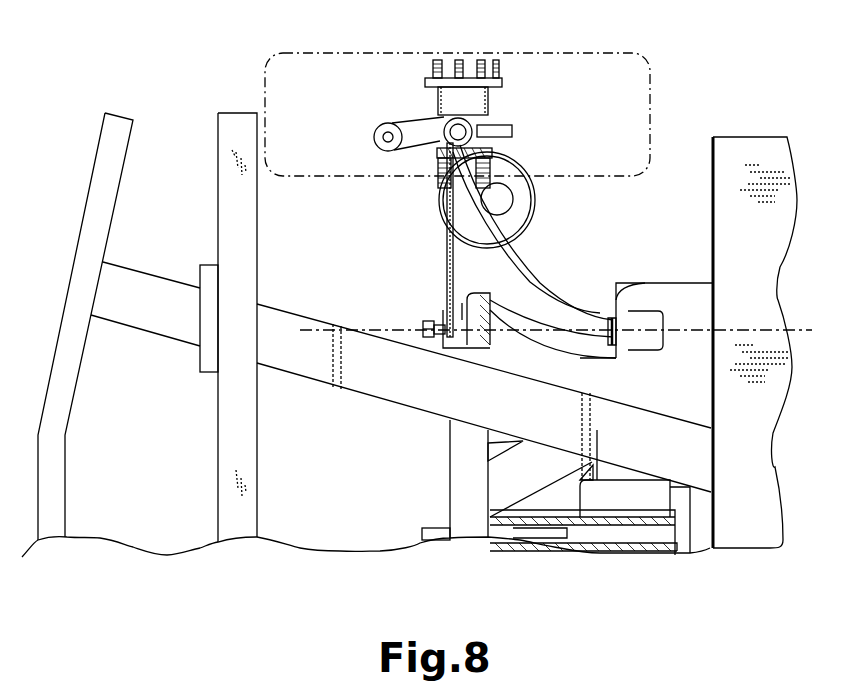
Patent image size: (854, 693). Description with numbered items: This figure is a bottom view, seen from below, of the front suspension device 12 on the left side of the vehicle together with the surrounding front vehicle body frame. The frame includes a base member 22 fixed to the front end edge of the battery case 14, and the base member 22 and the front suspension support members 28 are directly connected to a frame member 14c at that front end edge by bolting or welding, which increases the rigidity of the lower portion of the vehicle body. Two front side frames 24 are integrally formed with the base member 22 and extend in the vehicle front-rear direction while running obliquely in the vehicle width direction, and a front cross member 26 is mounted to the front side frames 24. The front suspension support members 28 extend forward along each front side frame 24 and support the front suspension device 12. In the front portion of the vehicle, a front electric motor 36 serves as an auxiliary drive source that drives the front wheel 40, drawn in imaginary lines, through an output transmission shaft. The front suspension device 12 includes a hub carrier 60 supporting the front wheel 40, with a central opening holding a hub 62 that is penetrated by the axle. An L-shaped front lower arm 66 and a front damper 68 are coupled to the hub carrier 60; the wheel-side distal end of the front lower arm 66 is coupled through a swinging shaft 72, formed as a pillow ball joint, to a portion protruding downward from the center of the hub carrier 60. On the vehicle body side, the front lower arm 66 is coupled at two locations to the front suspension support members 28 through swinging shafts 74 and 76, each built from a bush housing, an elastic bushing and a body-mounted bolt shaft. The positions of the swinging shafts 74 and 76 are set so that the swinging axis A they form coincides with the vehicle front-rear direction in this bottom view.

The front suspension device 12 is at (712, 76).
The battery case 14 is at (763, 137).
The frame member 14c is at (712, 170).
The base member 22 is at (707, 528).
The front side frame 24 is at (300, 303).
The front cross member 26 is at (218, 185).
The front suspension support member 28 is at (660, 282).
The front electric motor 36 is at (593, 535).
The front wheel 40 is at (650, 78).
The hub carrier 60 is at (410, 122).
The hub 62 is at (433, 102).
The front lower arm 66 is at (540, 282).
The front damper 68 is at (508, 197).
The swinging shaft 72 is at (513, 100).
The swinging shaft 74 is at (612, 306).
The swinging shaft 76 is at (442, 317).
The swinging axis A is at (387, 330).